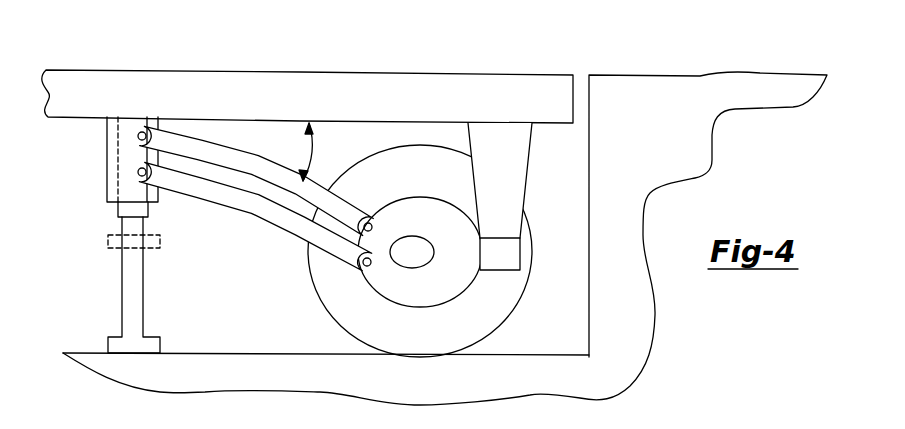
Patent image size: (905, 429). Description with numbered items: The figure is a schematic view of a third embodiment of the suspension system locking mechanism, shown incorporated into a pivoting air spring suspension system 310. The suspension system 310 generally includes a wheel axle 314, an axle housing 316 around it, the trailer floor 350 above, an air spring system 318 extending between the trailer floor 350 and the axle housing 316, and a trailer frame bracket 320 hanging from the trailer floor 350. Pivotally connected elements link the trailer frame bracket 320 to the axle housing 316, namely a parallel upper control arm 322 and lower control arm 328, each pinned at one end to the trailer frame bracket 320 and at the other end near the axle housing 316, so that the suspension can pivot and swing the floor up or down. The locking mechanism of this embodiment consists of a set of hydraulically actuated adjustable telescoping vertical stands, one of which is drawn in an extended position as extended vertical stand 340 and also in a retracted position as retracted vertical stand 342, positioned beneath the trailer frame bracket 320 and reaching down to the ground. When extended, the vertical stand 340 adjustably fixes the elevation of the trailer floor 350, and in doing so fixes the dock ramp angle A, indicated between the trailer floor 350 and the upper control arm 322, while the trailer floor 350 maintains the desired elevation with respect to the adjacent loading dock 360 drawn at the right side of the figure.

The pivoting air spring suspension system 310 is at (270, 290).
The wheel axle 314 is at (418, 260).
The axle housing 316 is at (460, 272).
The air spring system 318 is at (513, 147).
The trailer frame bracket 320 is at (107, 173).
The upper control arm 322 is at (228, 160).
The lower control arm 328 is at (230, 200).
The extended vertical stand 340 is at (112, 347).
The retracted vertical stand 342 is at (108, 242).
The trailer floor 350 is at (342, 85).
The loading dock 360 is at (665, 121).
The dock ramp angle A is at (312, 151).